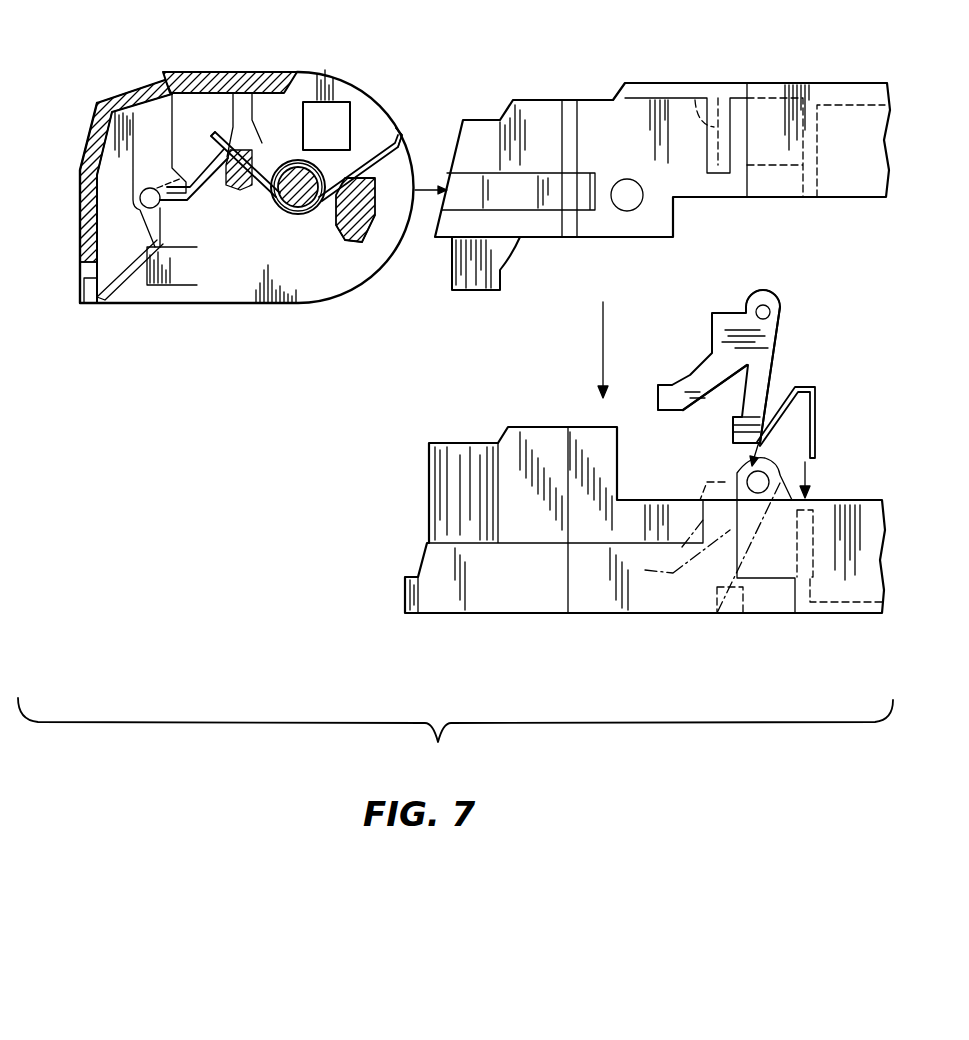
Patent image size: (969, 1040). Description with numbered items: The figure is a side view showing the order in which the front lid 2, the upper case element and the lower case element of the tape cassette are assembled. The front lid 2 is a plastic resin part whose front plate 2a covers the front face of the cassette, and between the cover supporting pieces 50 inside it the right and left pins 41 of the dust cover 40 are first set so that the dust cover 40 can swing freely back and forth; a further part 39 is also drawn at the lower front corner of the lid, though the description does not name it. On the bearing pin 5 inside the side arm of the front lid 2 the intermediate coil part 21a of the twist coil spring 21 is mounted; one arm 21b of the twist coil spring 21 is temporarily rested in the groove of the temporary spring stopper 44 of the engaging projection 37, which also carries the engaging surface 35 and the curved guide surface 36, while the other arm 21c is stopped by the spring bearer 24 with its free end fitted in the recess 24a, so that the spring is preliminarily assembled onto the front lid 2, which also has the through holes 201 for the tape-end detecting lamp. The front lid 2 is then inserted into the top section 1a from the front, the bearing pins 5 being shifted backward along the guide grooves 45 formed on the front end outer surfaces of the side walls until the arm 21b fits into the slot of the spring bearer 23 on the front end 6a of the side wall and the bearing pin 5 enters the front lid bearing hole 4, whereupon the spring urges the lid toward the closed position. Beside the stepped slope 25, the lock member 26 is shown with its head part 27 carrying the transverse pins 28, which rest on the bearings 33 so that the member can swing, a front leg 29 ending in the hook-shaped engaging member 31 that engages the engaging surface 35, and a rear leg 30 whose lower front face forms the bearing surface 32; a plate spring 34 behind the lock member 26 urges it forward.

The top section 1a is at (794, 78).
The front lid 2 is at (120, 90).
The front plate 2a is at (88, 190).
The front lid bearing hole 4 is at (631, 200).
The bearing pin 5 is at (288, 211).
The front end of side wall 6a is at (548, 102).
The twist coil spring 21 is at (265, 212).
The intermediate coil part 21a is at (293, 167).
The arm of twist coil spring 21b is at (399, 142).
The other arm of twist coil spring 21c is at (214, 134).
The spring bearer 23 is at (700, 90).
The spring bearer 24 is at (234, 190).
The recess 24a is at (232, 150).
The stepped slope 25 is at (571, 153).
The lock member 26 is at (732, 306).
The head part 27 is at (782, 313).
The transverse pins 28 is at (768, 308).
The front leg 29 is at (700, 380).
The rear leg 30 is at (770, 373).
The engaging member 31 is at (661, 388).
The bearing surface 32 is at (731, 430).
The bearings 33 is at (770, 470).
The plate spring 34 is at (816, 448).
The engaging surface 35 is at (352, 241).
The curved guide surface 36 is at (370, 219).
The engaging projection 37 is at (336, 223).
The projection 39 is at (82, 280).
The dust cover 40 is at (140, 295).
The pins 41 is at (142, 202).
The temporary spring stopper 44 is at (347, 184).
The guide grooves 45 is at (447, 236).
The cover supporting pieces 50 is at (137, 152).
The through holes 201 is at (348, 110).